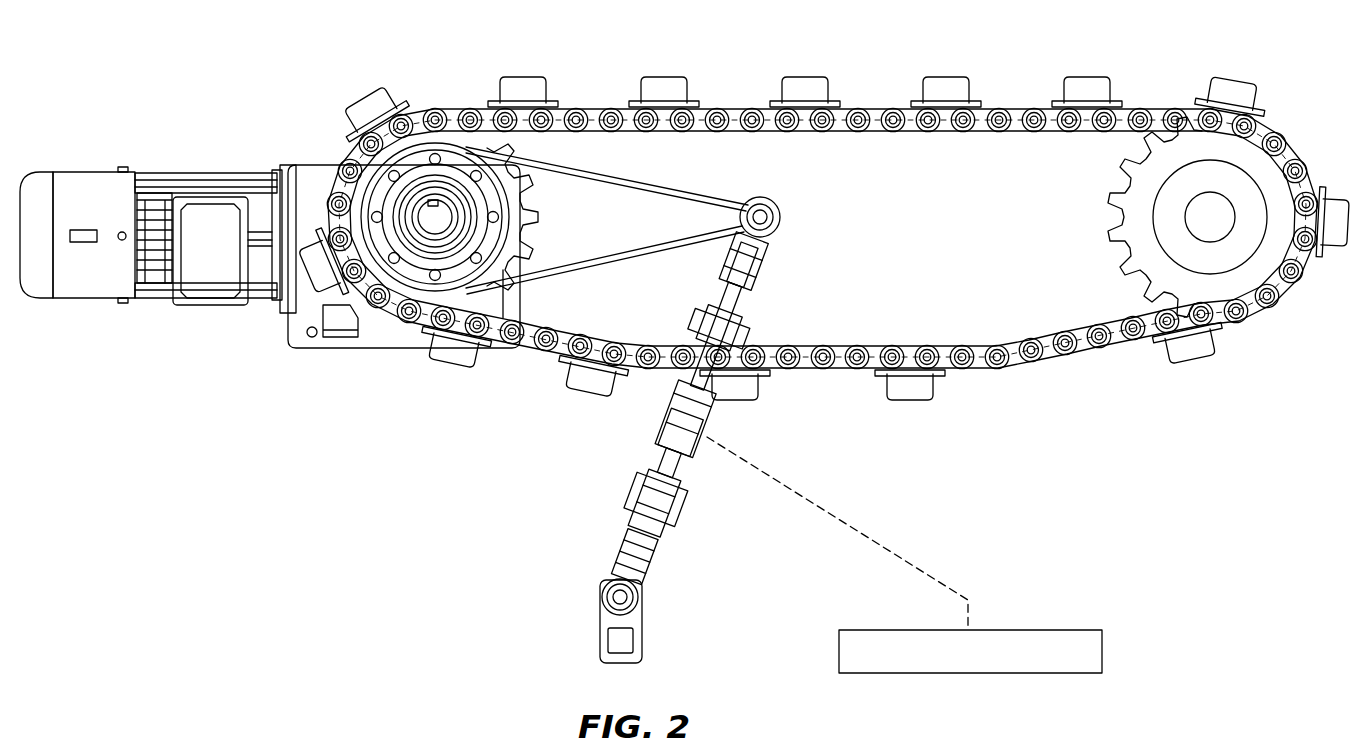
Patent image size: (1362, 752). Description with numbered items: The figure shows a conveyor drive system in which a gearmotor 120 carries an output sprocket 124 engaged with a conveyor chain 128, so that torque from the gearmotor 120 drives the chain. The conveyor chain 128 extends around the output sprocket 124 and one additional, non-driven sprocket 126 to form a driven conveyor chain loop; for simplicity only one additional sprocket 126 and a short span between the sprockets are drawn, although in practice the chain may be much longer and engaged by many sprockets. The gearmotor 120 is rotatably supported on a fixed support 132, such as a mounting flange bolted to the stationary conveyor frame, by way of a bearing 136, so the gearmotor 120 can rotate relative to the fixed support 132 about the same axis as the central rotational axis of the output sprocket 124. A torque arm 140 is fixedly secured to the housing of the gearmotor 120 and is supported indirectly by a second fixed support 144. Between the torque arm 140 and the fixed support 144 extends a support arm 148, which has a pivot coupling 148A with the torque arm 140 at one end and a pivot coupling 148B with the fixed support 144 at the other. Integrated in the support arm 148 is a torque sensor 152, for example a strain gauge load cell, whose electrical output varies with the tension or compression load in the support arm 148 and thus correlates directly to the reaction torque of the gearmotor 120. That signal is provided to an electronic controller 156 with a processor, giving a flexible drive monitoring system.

The gearmotor 120 is at (310, 178).
The output sprocket 124 is at (535, 222).
The sprocket 126 is at (1145, 187).
The conveyor chain 128 is at (862, 100).
The fixed support 132 is at (438, 338).
The bearing 136 is at (405, 233).
The torque arm 140 is at (678, 196).
The fixed support 144 is at (602, 645).
The support arm 148 is at (674, 431).
The pivot coupling 148A is at (773, 203).
The pivot coupling 148B is at (605, 592).
The torque sensor 152 is at (655, 405).
The electronic controller 156 is at (1032, 630).